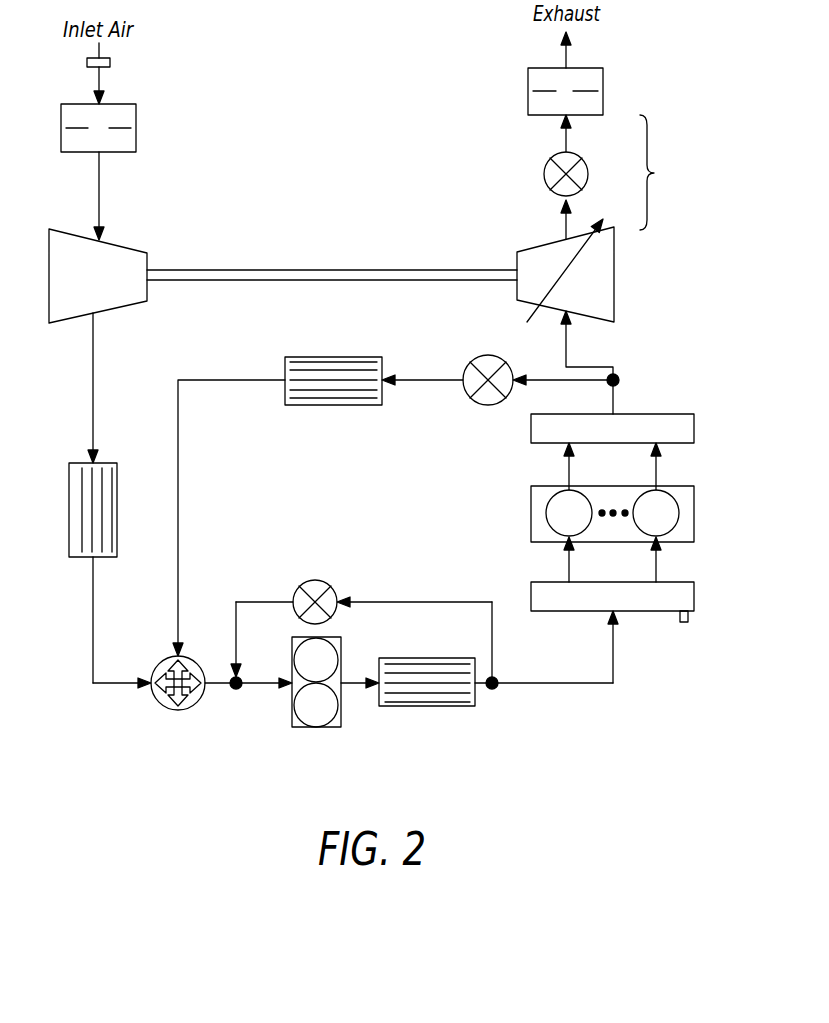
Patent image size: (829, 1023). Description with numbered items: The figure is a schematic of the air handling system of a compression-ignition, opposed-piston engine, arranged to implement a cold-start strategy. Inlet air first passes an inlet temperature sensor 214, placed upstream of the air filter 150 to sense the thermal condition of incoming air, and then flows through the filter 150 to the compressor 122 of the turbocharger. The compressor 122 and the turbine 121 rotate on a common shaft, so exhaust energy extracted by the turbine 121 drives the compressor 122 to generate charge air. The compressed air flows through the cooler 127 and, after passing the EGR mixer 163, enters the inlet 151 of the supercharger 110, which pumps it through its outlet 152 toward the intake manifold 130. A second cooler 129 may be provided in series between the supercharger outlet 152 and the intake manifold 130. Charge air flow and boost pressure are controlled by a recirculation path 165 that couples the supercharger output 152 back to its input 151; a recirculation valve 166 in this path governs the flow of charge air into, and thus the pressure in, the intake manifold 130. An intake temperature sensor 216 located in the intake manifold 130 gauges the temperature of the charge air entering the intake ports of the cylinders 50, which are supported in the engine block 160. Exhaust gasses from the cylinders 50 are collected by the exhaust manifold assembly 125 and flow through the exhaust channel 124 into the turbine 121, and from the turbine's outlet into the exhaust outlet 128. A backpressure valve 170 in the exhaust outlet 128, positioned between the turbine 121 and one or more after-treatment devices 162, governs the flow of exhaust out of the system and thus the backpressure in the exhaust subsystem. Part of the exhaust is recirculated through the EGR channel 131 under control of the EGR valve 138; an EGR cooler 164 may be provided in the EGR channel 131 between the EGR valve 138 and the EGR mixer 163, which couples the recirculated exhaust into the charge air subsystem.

The inlet temperature sensor 214 is at (110, 62).
The air filter 150 is at (136, 110).
The compressor 122 is at (58, 323).
The cooler 127 is at (69, 510).
The EGR mixer 163 is at (178, 710).
The inlet of the supercharger 151 is at (240, 689).
The recirculation path 165 is at (380, 570).
The recirculation valve 166 is at (307, 580).
The supercharger 110 is at (314, 727).
The outlet of the supercharger 152 is at (350, 686).
The second cooler 129 is at (450, 706).
The intake manifold 130 is at (694, 598).
The intake temperature sensor 216 is at (684, 622).
The engine block 160 is at (694, 527).
The cylinders 50 is at (546, 513).
The exhaust manifold assembly 125 is at (694, 428).
The exhaust channel 124 is at (566, 353).
The turbine 121 is at (614, 295).
The backpressure valve 170 is at (544, 181).
The after-treatment devices 162 is at (603, 97).
The exhaust outlet 128 is at (670, 172).
The EGR valve 138 is at (488, 406).
The EGR channel 131 is at (405, 340).
The EGR cooler 164 is at (330, 405).